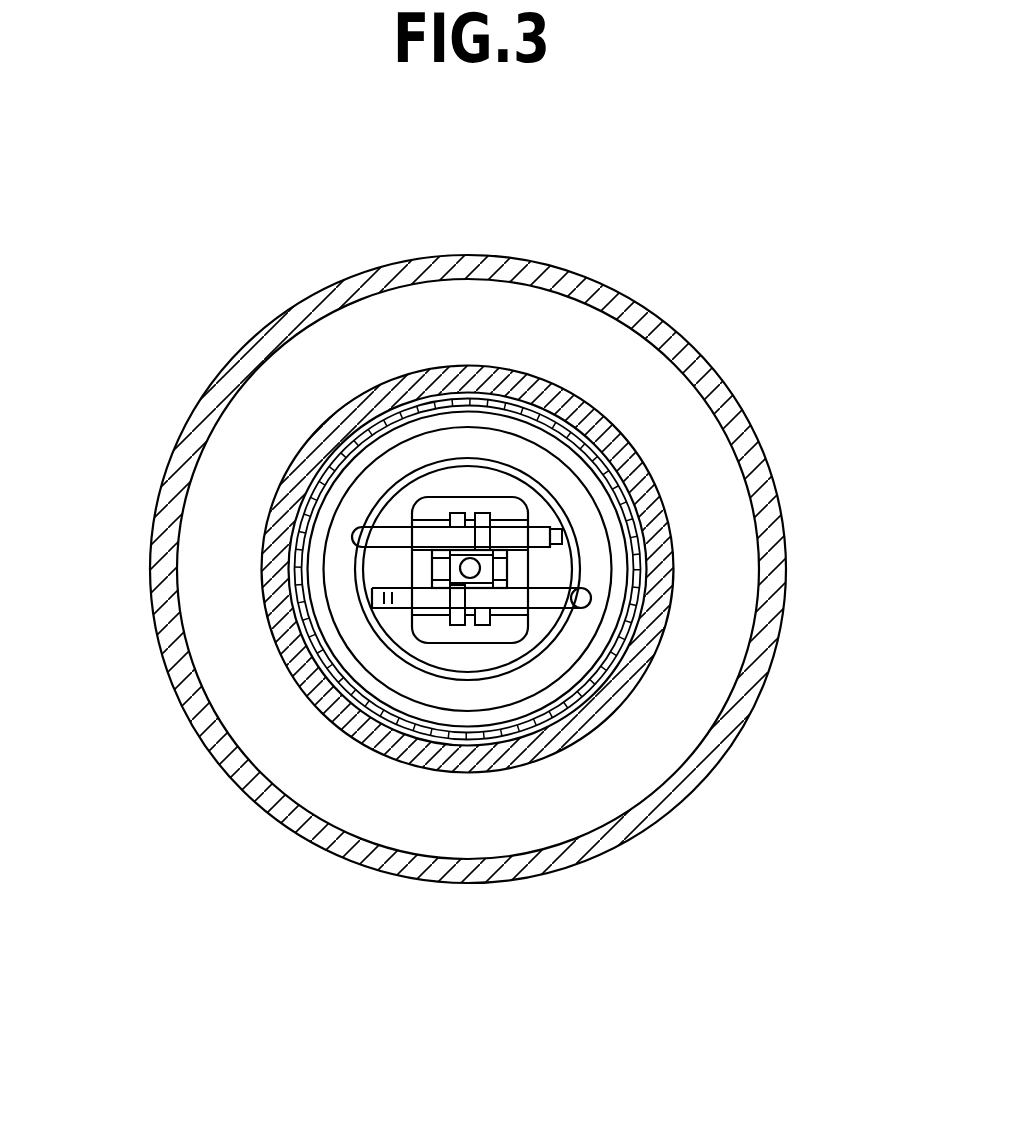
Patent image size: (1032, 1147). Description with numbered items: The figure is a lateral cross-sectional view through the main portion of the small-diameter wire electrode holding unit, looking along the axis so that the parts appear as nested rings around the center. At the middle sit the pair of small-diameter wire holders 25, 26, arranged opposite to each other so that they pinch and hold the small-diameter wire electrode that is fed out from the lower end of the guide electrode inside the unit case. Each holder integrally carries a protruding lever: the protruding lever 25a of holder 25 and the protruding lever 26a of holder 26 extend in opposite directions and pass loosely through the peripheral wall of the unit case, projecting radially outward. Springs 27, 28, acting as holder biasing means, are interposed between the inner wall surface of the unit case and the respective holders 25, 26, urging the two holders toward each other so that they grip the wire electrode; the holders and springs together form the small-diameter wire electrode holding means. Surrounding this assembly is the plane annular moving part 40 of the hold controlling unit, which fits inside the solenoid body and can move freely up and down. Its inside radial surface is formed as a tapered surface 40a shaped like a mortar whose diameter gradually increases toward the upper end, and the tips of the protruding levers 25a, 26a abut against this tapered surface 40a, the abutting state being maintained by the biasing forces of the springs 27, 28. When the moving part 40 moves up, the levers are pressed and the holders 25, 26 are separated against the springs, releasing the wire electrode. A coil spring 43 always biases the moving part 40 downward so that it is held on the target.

The small-diameter wire holder 25 is at (440, 568).
The protruding lever 25a is at (538, 600).
The small-diameter wire holder 26 is at (515, 570).
The protruding lever 26a is at (393, 532).
The spring 27 is at (435, 523).
The spring 28 is at (517, 522).
The moving part 40 is at (620, 578).
The tapered surface 40a is at (563, 652).
The coil spring 43 is at (655, 522).